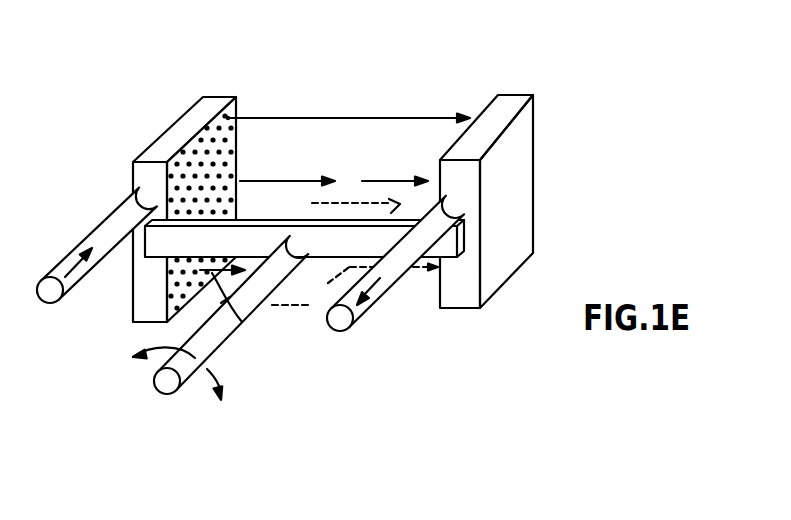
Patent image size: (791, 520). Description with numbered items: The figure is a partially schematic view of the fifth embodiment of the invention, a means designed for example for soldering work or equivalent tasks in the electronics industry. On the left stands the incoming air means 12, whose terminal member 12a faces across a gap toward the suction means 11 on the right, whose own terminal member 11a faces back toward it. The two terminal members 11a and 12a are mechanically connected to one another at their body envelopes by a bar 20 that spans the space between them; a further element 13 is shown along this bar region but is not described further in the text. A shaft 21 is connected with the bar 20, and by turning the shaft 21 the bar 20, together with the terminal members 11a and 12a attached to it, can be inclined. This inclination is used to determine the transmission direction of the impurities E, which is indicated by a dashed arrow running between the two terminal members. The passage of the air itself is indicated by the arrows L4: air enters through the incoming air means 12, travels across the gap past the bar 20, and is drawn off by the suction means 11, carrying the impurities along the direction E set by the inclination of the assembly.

The second electrode block 11 is at (534, 84).
The terminal member of a suction means 11a is at (453, 282).
The first electrode block 12 is at (165, 118).
The terminal member of an incoming air means 12a is at (147, 296).
The bar / optical waveguide element 13 is at (321, 297).
The bar 20 is at (238, 320).
The shaft 21 is at (218, 337).
The transmission direction of the impurities E is at (348, 203).
The air passage arrows L4 is at (277, 118).